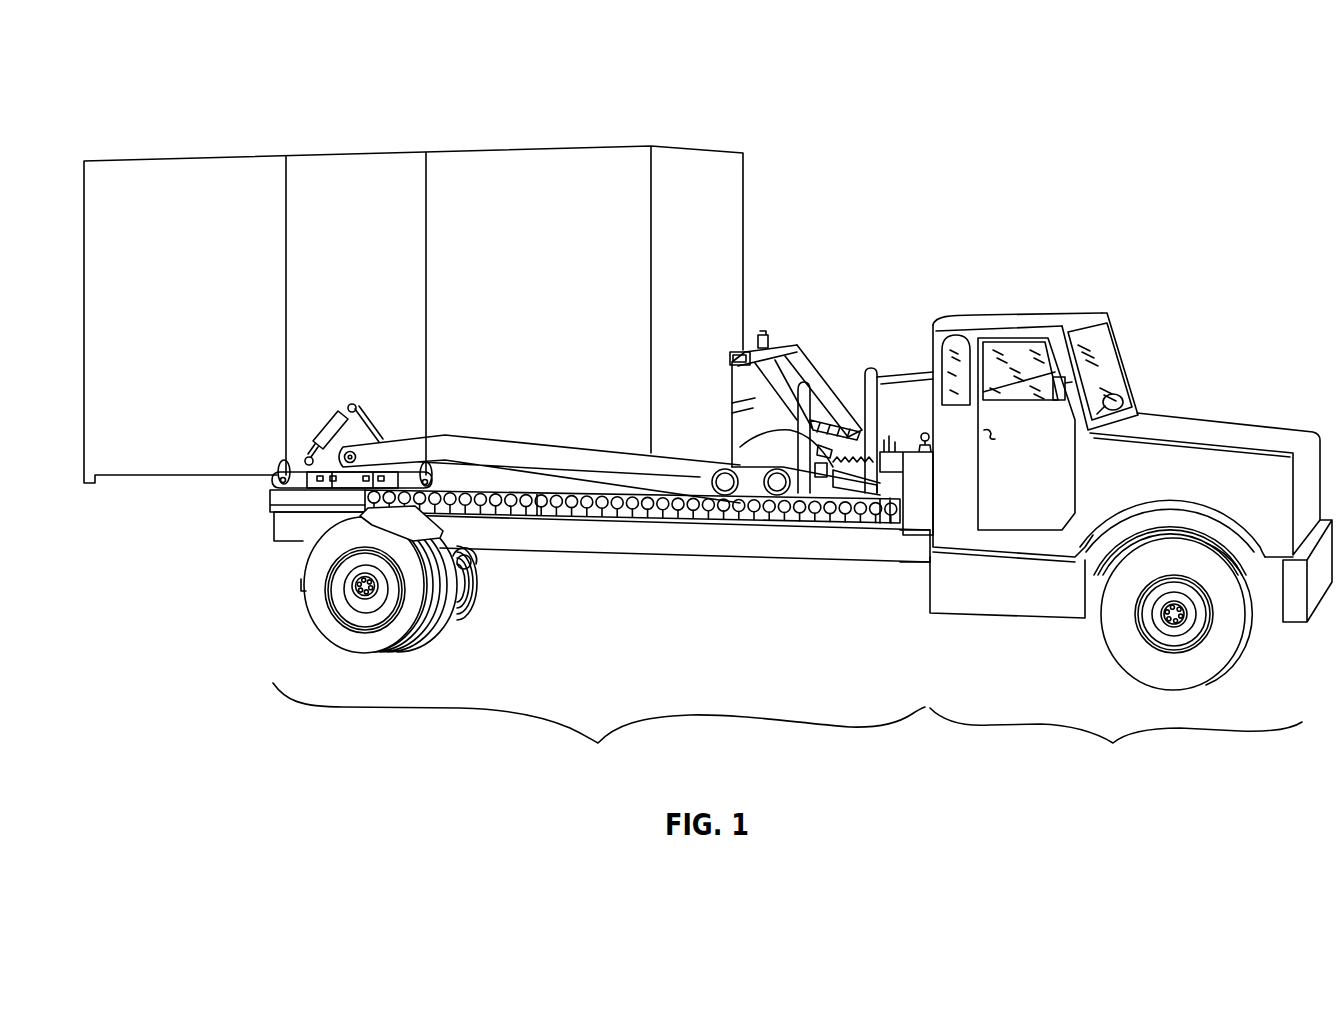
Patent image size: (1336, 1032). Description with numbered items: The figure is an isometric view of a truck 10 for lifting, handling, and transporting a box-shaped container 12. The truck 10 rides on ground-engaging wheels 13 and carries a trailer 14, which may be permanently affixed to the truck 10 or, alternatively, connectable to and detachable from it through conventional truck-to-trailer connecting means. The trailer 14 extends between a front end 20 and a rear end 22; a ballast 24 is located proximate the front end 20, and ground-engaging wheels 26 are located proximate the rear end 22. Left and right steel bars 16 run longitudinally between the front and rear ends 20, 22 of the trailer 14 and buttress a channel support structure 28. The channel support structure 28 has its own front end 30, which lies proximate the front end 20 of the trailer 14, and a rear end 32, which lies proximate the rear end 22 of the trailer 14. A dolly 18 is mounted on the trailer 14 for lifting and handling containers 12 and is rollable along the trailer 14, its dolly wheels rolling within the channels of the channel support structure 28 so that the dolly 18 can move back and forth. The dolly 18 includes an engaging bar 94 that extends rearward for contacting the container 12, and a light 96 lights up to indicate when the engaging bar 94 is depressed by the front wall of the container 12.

The truck 10 is at (1131, 546).
The container 12 is at (362, 147).
The ground-engaging wheels 13 is at (1203, 690).
The trailer 14 is at (599, 731).
The steel bars 16 is at (567, 542).
The dolly 18 is at (807, 333).
The front end 20 is at (910, 552).
The rear end 22 is at (292, 543).
The ballast 24 is at (918, 462).
The ground-engaging wheels 26 is at (369, 655).
The channel support structure 28 is at (679, 514).
The front end 30 is at (878, 524).
The rear end 32 is at (270, 492).
The engaging bar 94 is at (730, 446).
The light 96 is at (765, 330).